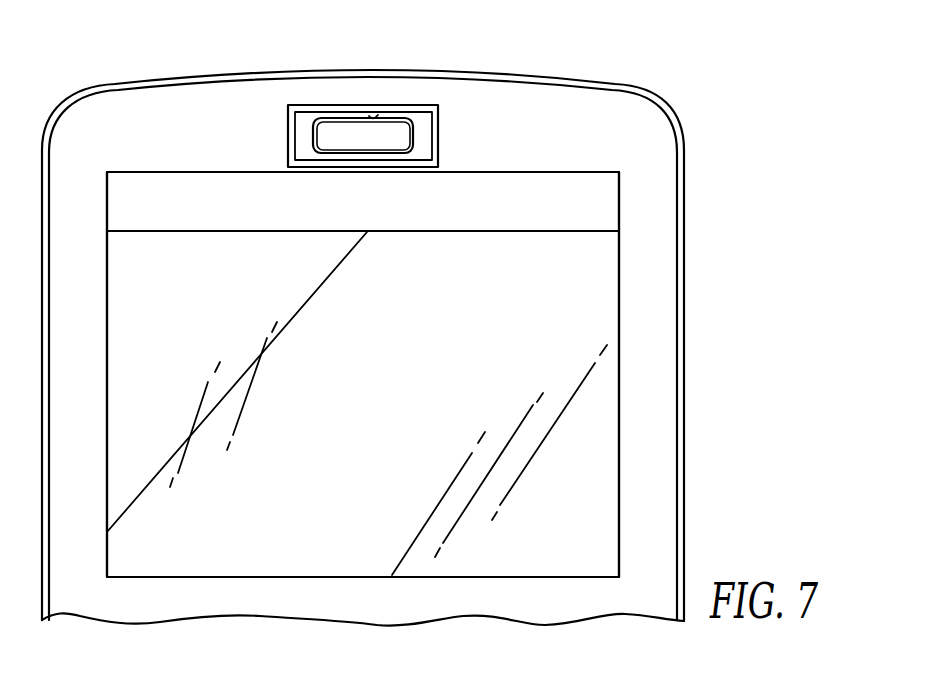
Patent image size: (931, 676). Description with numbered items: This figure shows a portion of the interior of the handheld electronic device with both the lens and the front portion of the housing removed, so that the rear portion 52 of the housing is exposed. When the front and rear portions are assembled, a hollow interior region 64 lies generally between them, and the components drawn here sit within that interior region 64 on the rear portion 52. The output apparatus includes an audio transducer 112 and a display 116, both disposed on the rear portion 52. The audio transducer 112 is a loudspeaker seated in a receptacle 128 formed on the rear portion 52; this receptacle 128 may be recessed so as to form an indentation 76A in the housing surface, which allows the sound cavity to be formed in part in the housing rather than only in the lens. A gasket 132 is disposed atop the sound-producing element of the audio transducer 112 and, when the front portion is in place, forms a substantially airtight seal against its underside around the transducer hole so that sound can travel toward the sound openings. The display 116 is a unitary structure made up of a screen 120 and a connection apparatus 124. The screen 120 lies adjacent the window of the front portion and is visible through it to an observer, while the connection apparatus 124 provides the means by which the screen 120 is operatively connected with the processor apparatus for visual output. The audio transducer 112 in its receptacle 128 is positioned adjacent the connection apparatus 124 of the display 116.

The rear portion 52 is at (684, 209).
The interior region 64 is at (660, 350).
The indentation 76A is at (374, 114).
The audio transducer 112 is at (438, 117).
The display 116 is at (624, 202).
The screen 120 is at (620, 290).
The connection apparatus 124 is at (573, 172).
The receptacle 128 is at (438, 142).
The gasket 132 is at (338, 120).